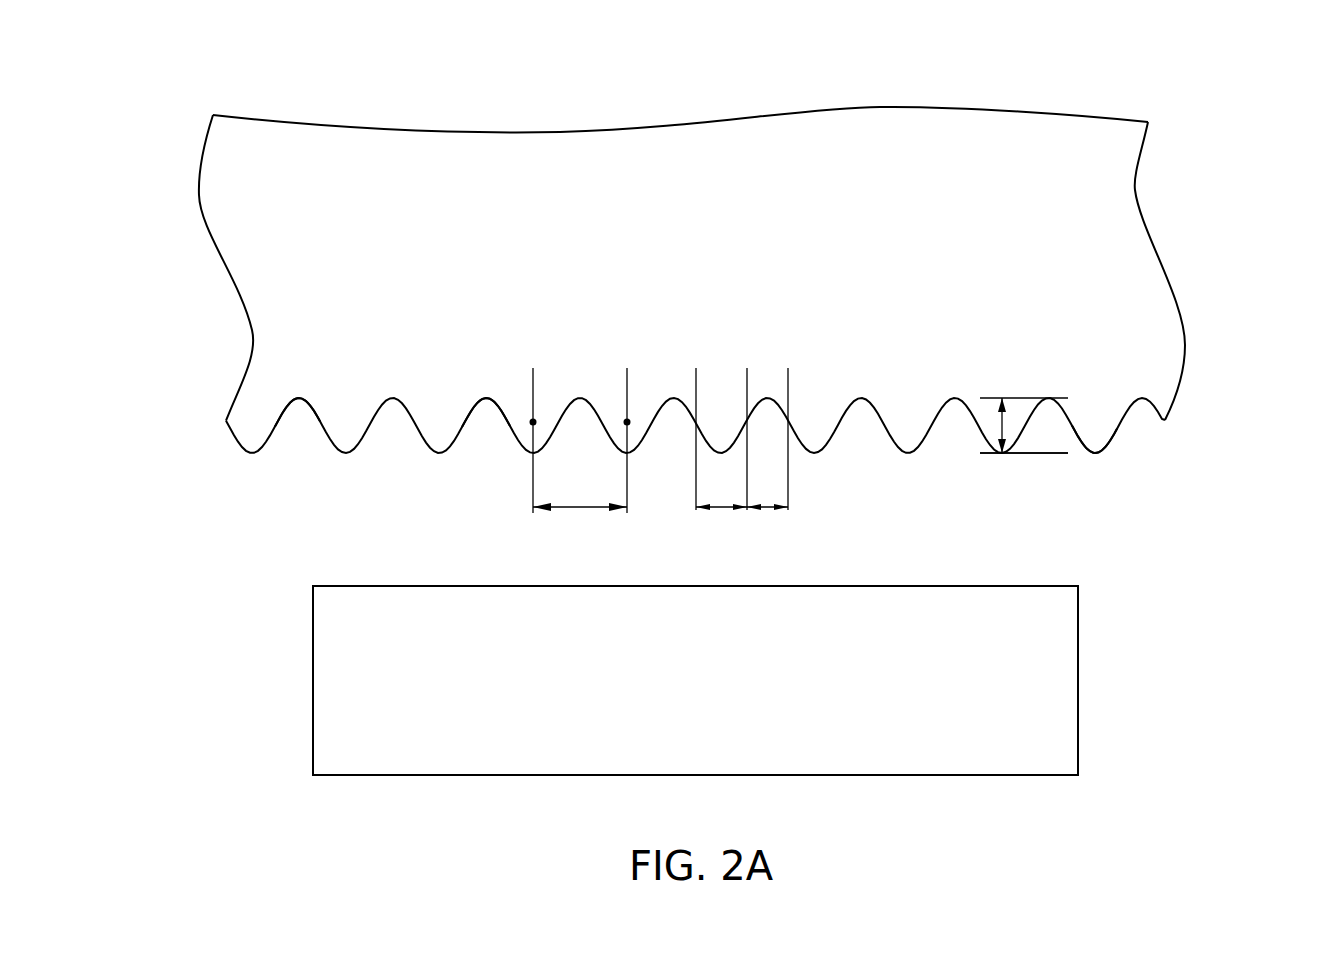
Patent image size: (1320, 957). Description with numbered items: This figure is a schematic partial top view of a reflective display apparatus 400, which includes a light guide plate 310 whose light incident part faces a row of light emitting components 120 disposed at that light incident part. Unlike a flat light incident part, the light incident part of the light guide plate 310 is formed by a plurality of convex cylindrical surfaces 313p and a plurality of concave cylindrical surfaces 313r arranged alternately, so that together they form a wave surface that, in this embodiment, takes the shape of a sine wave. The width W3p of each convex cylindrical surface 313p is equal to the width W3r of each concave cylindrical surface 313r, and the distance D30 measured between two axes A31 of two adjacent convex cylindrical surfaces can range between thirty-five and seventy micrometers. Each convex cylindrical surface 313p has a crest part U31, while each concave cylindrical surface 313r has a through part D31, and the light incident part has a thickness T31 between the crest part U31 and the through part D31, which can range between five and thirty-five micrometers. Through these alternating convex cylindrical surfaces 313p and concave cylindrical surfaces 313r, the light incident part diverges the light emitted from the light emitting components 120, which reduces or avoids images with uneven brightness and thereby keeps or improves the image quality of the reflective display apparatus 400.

The reflective display apparatus 400 is at (180, 68).
The light guide plate 310 is at (1103, 205).
The light emitting components 120 is at (672, 695).
The concave cylindrical surface 313r is at (315, 411).
The convex cylindrical surface 313p is at (1112, 450).
The axis A31 is at (537, 417).
The distance between two axes of two adjacent convex cylindrical surfaces D30 is at (580, 525).
The width of the convex cylindrical surface W3p is at (723, 509).
The width of the concave cylindrical surface W3r is at (767, 509).
The through part D31 is at (1048, 398).
The thickness T31 is at (1000, 427).
The crest part U31 is at (1002, 455).